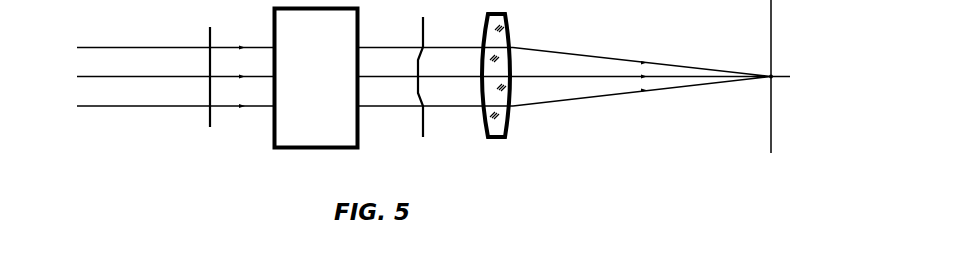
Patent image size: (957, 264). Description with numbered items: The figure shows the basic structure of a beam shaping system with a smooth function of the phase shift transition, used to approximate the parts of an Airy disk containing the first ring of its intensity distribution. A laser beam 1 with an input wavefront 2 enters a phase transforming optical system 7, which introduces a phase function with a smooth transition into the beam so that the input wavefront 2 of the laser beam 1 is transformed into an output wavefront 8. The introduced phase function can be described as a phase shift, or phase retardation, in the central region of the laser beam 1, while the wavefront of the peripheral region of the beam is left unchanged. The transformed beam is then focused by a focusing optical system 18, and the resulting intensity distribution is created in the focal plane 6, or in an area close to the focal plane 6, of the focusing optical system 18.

The laser beam 1 is at (139, 114).
The input wavefront 2 is at (208, 123).
The phase transforming optical system 7 is at (273, 133).
The output wavefront 8 is at (423, 118).
The focusing optical system 18 is at (508, 118).
The focal plane 6 is at (771, 118).